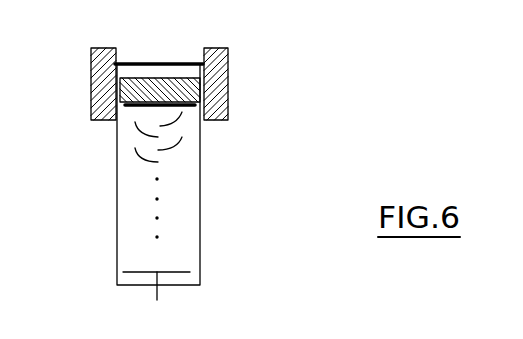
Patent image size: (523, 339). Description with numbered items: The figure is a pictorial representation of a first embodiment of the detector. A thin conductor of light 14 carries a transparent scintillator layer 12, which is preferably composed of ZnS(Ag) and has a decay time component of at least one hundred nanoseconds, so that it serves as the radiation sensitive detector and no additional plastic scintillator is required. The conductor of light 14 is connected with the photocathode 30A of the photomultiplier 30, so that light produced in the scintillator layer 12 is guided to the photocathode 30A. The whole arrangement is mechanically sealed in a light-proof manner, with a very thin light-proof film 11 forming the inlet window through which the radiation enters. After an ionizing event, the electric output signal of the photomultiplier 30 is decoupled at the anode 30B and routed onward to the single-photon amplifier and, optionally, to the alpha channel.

The light-proof film 11 is at (187, 59).
The scintillator layer 12 is at (197, 80).
The conductor of light 14 is at (225, 104).
The photomultiplier 30 is at (200, 184).
The photocathode 30A is at (128, 107).
The anode 30B is at (160, 287).